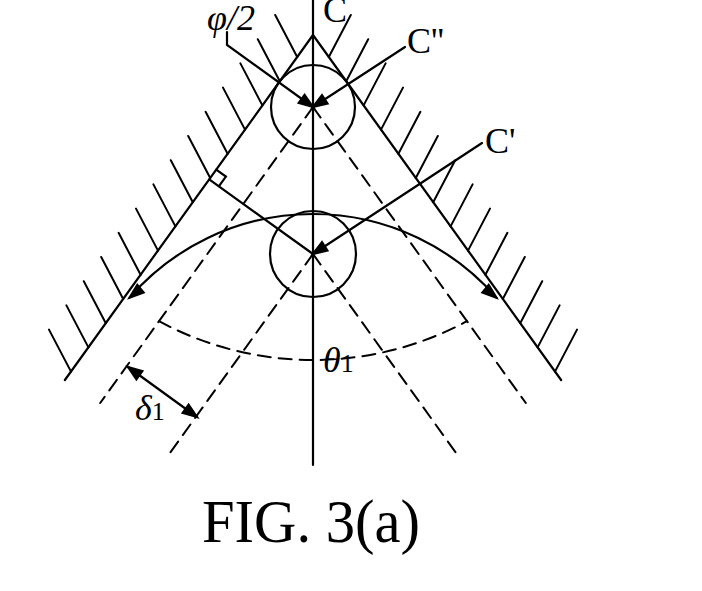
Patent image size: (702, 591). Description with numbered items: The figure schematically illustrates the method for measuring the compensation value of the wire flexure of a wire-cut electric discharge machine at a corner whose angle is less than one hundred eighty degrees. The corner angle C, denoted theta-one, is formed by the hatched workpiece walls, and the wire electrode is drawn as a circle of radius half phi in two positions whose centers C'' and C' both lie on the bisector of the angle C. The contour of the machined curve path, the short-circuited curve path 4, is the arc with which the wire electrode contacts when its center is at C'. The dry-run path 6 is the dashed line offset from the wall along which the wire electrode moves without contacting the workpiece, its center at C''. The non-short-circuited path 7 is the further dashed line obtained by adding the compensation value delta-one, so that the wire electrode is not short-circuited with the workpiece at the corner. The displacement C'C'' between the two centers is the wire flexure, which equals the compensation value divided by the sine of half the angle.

The short-circuited curve path 4 is at (245, 217).
The new dry-run path 6 is at (142, 348).
The non-short-circuited path 7 is at (222, 383).